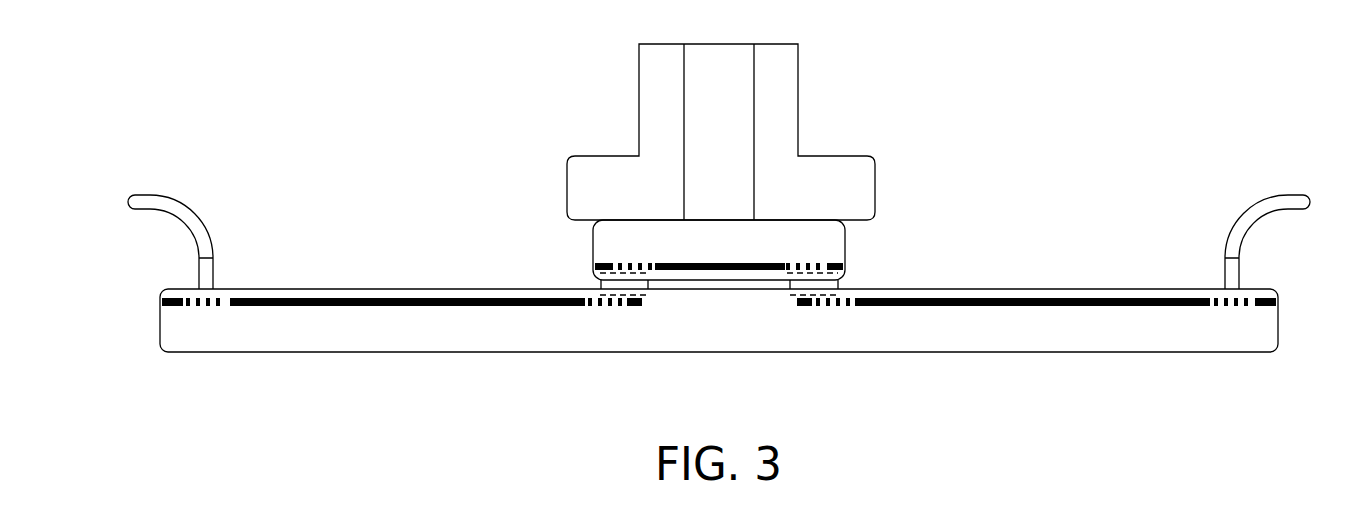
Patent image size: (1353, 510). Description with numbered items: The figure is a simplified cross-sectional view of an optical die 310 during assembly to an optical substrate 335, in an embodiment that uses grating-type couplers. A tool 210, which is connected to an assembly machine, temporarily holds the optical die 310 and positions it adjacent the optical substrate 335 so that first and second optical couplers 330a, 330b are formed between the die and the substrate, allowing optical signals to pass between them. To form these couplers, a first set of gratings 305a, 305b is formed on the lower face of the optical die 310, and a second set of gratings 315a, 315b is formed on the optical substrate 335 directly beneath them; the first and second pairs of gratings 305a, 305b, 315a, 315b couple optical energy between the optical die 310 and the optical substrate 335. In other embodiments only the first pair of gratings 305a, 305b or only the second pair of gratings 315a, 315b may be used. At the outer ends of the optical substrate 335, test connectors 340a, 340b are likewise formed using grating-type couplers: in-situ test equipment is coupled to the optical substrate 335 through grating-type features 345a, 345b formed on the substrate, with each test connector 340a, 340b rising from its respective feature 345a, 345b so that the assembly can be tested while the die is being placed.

The tool 210 is at (786, 77).
The optical die 310 is at (828, 237).
The first grating 305a is at (628, 262).
The second grating 305b is at (808, 260).
The first substrate grating 315a is at (613, 306).
The second substrate grating 315b is at (826, 306).
The first optical coupler 330a is at (650, 296).
The second optical coupler 330b is at (790, 296).
The optical substrate 335 is at (320, 352).
The first test connector 340a is at (183, 274).
The second test connector 340b is at (1300, 252).
The first grating-type feature 345a is at (217, 297).
The second grating-type feature 345b is at (1217, 297).